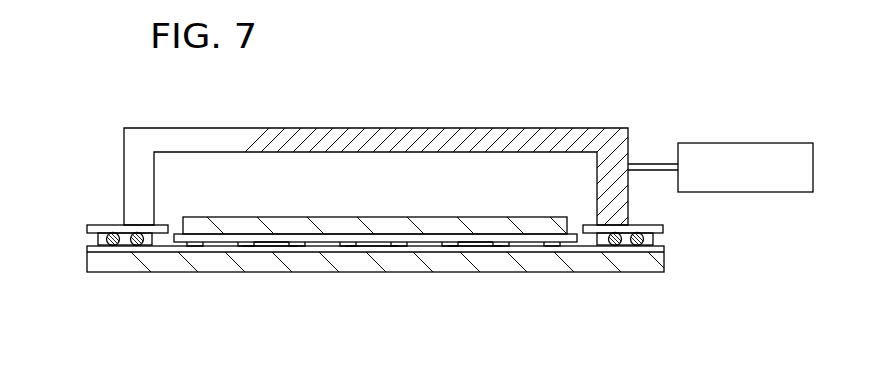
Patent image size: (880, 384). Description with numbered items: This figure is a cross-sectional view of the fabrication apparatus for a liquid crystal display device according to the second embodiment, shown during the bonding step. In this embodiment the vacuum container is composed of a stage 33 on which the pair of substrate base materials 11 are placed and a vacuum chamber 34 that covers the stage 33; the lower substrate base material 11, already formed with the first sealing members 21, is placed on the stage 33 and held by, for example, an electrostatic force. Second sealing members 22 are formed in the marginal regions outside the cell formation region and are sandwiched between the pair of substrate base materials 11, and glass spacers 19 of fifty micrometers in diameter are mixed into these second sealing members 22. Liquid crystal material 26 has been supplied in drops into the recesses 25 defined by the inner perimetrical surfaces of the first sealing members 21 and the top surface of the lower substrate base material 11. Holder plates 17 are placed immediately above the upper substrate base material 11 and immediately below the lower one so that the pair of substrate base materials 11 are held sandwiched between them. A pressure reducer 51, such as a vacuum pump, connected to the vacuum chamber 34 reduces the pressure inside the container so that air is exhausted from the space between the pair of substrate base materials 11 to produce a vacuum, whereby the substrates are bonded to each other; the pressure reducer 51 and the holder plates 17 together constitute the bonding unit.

The vacuum chamber 34 is at (358, 139).
The pressure reducer 51 is at (768, 143).
The holder plate 17 is at (394, 220).
The substrate base material 11 is at (200, 235).
The recess 25 is at (252, 246).
The liquid crystal material 26 is at (272, 244).
The second sealing member 22 is at (86, 236).
The glass spacer 19 is at (113, 246).
The stage 33 is at (523, 267).
The first sealing member 21 is at (243, 243).